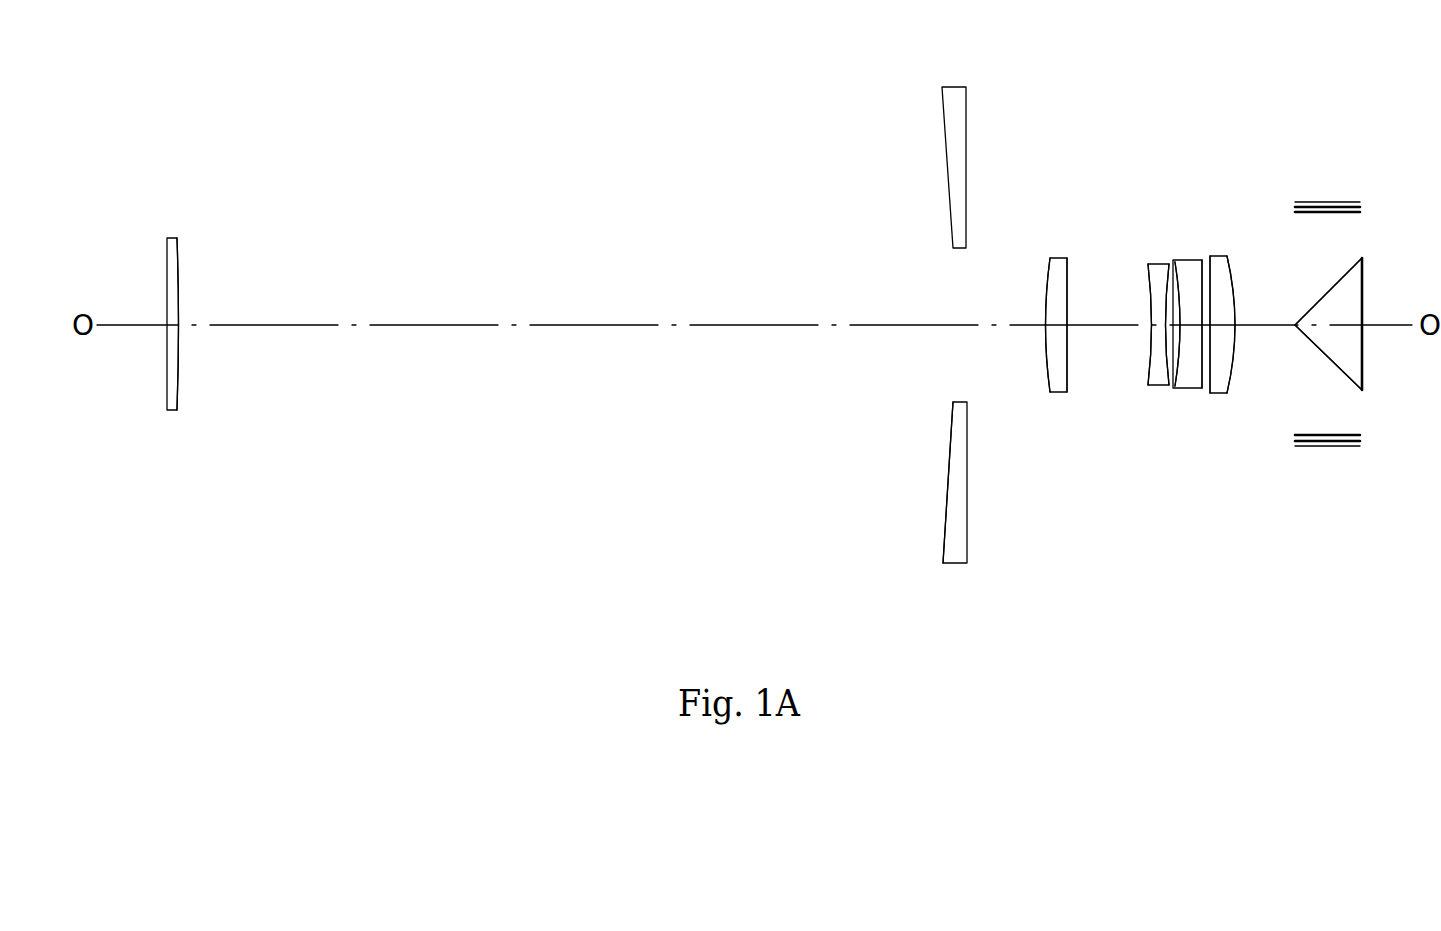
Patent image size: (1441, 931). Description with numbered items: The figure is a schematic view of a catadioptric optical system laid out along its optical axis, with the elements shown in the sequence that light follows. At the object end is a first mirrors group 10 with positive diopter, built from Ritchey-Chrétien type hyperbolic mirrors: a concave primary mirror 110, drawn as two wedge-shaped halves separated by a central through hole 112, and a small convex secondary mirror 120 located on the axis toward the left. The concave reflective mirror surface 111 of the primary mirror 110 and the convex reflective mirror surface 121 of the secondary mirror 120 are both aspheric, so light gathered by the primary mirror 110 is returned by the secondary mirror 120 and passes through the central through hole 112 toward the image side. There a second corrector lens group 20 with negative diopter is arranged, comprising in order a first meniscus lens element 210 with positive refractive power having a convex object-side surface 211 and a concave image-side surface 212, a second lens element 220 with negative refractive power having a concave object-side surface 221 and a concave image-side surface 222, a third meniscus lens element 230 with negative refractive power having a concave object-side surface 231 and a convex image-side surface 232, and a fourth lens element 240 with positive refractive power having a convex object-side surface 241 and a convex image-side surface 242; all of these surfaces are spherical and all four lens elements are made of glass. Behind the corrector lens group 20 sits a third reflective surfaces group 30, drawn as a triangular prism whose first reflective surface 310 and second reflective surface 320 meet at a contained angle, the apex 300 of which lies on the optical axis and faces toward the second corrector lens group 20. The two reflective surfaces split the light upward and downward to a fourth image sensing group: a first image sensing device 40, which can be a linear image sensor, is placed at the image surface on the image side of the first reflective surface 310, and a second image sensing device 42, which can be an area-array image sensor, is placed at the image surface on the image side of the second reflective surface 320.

The first mirrors group 10 is at (962, 50).
The second corrector lens group 20 is at (1222, 110).
The third reflective surfaces group 30 is at (1336, 327).
The first image sensing device 40 is at (1328, 202).
The second image sensing device 42 is at (1328, 447).
The concave primary mirror 110 is at (953, 552).
The concave reflective mirror surface 111 is at (945, 531).
The central through hole 112 is at (929, 370).
The convex secondary mirror 120 is at (171, 255).
The convex reflective mirror surface 121 is at (178, 355).
The first meniscus lens element 210 is at (1059, 268).
The convex object-side surface 211 is at (1045, 372).
The concave image-side surface 212 is at (1067, 375).
The second lens element 220 is at (1157, 270).
The concave object-side surface 221 is at (1151, 376).
The concave image-side surface 222 is at (1165, 372).
The third meniscus lens element 230 is at (1185, 267).
The concave object-side surface 231 is at (1179, 372).
The convex image-side surface 232 is at (1199, 382).
The fourth lens element 240 is at (1219, 262).
The convex object-side surface 241 is at (1213, 385).
The convex image-side surface 242 is at (1233, 385).
The apex 300 is at (1295, 323).
The first reflective surface 310 is at (1326, 292).
The second reflective surface 320 is at (1326, 356).